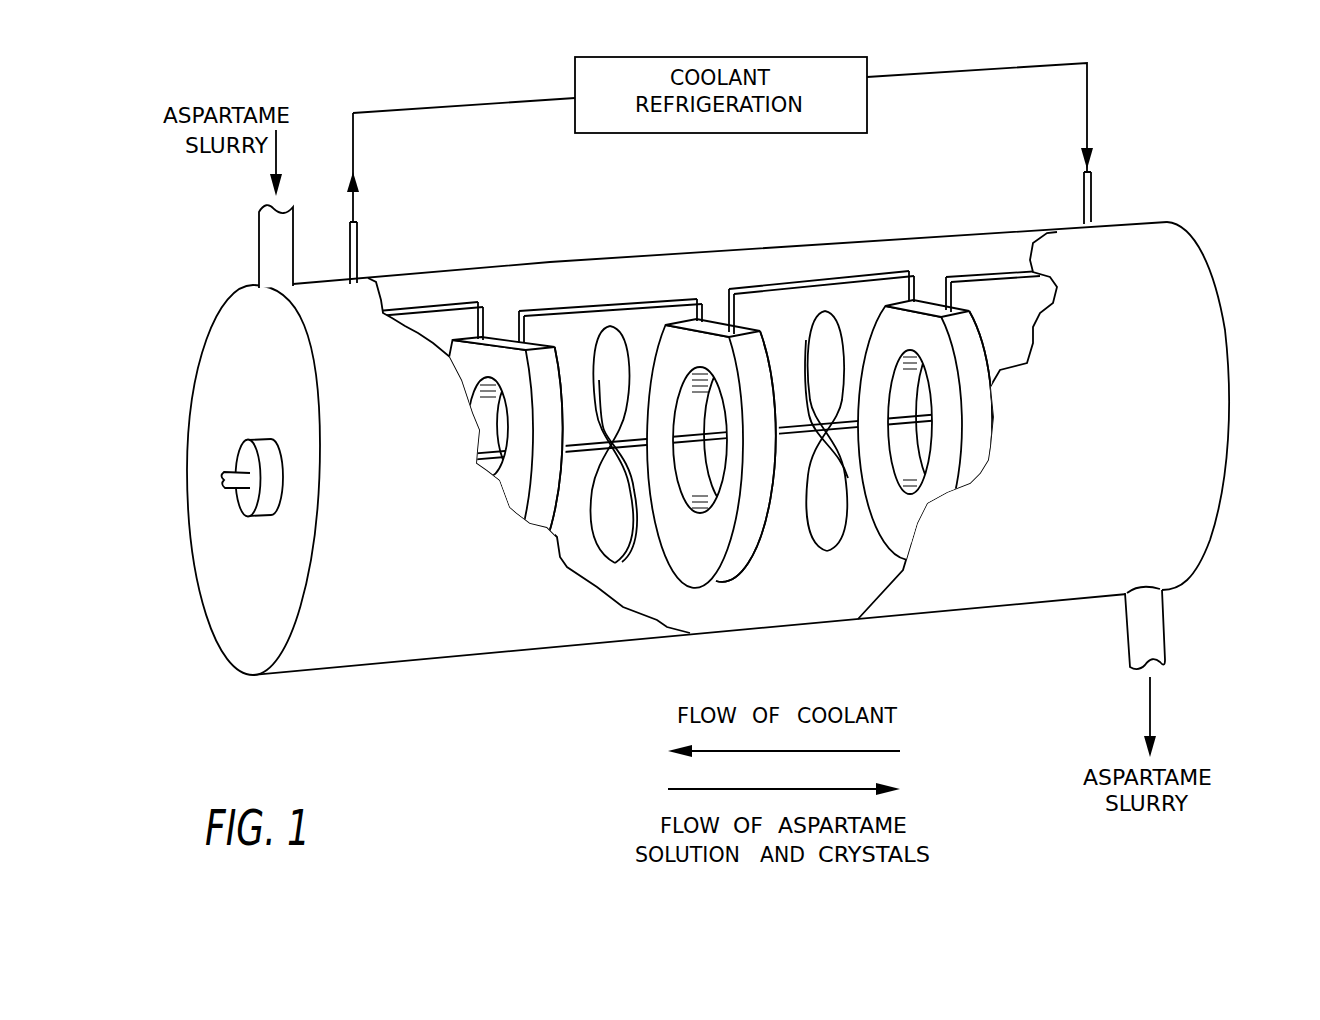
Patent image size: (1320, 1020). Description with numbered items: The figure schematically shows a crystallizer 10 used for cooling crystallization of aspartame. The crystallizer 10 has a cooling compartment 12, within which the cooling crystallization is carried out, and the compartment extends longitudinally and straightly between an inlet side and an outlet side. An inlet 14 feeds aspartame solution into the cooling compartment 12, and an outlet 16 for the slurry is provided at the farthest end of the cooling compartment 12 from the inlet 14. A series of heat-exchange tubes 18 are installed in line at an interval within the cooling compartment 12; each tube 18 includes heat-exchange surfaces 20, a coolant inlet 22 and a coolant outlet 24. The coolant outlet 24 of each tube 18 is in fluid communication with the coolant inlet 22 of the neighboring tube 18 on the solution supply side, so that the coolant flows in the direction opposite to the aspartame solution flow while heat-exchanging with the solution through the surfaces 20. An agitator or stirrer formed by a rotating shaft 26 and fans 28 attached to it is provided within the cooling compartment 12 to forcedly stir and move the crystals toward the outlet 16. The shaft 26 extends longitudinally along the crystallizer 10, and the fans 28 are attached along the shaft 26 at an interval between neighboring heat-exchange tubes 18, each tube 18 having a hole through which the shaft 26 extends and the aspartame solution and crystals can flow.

The crystallizer 10 is at (1200, 146).
The cooling compartment 12 is at (777, 603).
The inlet 14 is at (272, 263).
The outlet 16 is at (1143, 612).
The heat-exchange tube 18 is at (545, 503).
The heat-exchange surface 20 is at (500, 375).
The coolant inlet 22 is at (523, 331).
The coolant outlet 24 is at (487, 313).
The rotating shaft 26 is at (228, 474).
The fan 28 is at (610, 548).